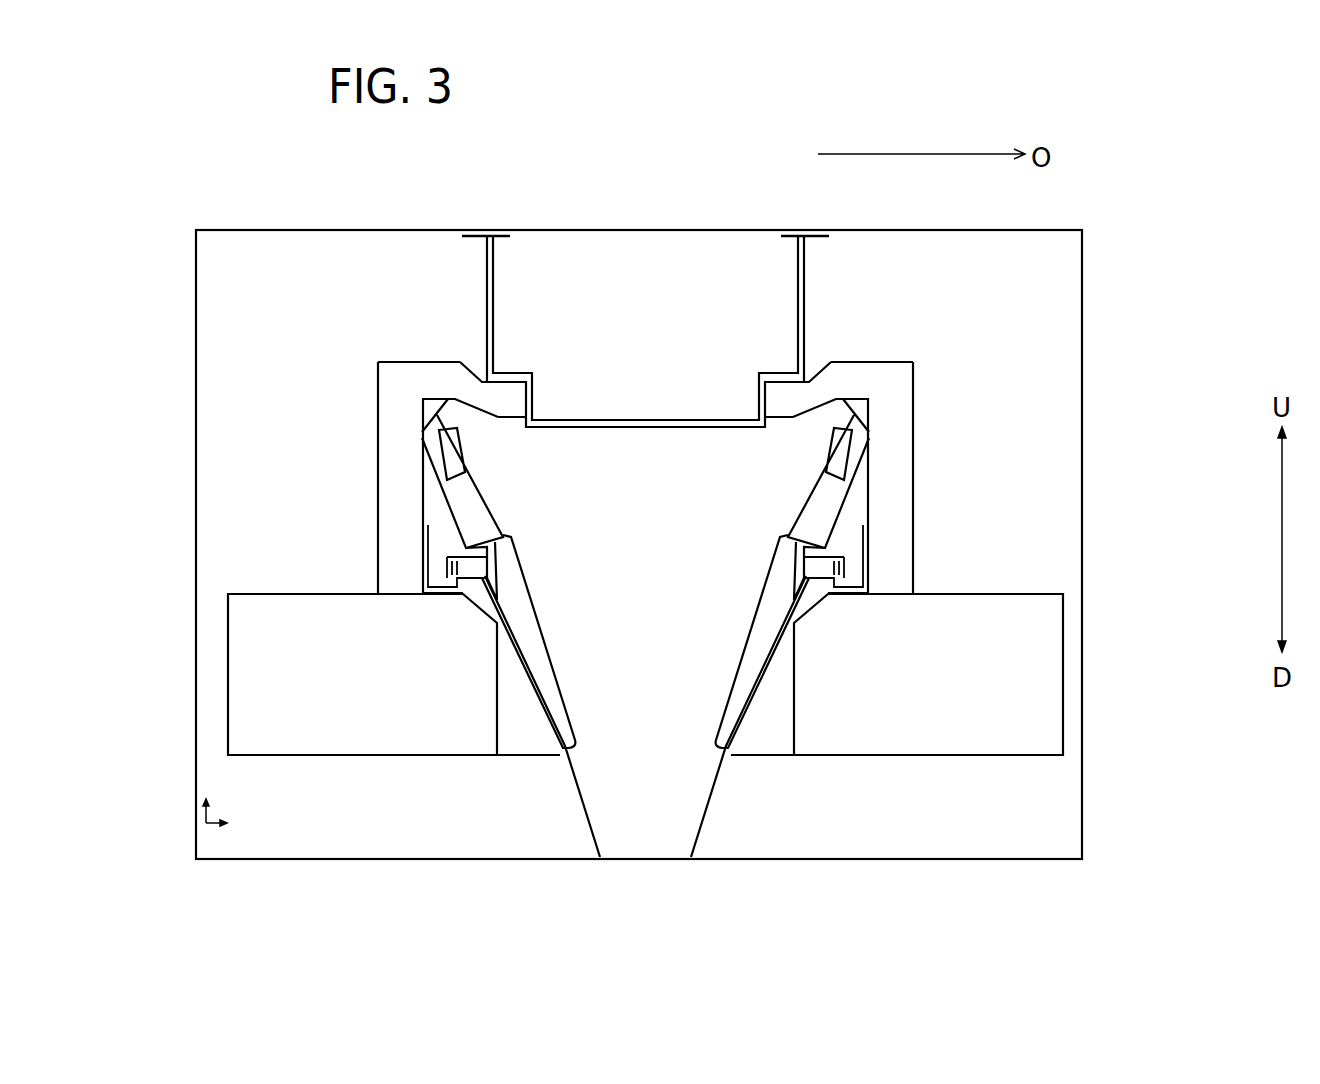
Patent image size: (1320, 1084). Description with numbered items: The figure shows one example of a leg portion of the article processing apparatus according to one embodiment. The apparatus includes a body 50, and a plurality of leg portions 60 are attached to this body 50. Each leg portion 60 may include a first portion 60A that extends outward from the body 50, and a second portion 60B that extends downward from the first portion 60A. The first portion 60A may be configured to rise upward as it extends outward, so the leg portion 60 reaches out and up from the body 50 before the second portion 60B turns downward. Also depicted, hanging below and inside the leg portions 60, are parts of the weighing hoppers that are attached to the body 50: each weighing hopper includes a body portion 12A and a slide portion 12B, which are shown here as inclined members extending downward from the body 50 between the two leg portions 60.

The leg portion 60 is at (514, 381).
The first portion 60A is at (449, 382).
The second portion 60B is at (395, 496).
The body 50 is at (658, 282).
The body portion 12A is at (470, 515).
The slide portion 12B is at (539, 652).